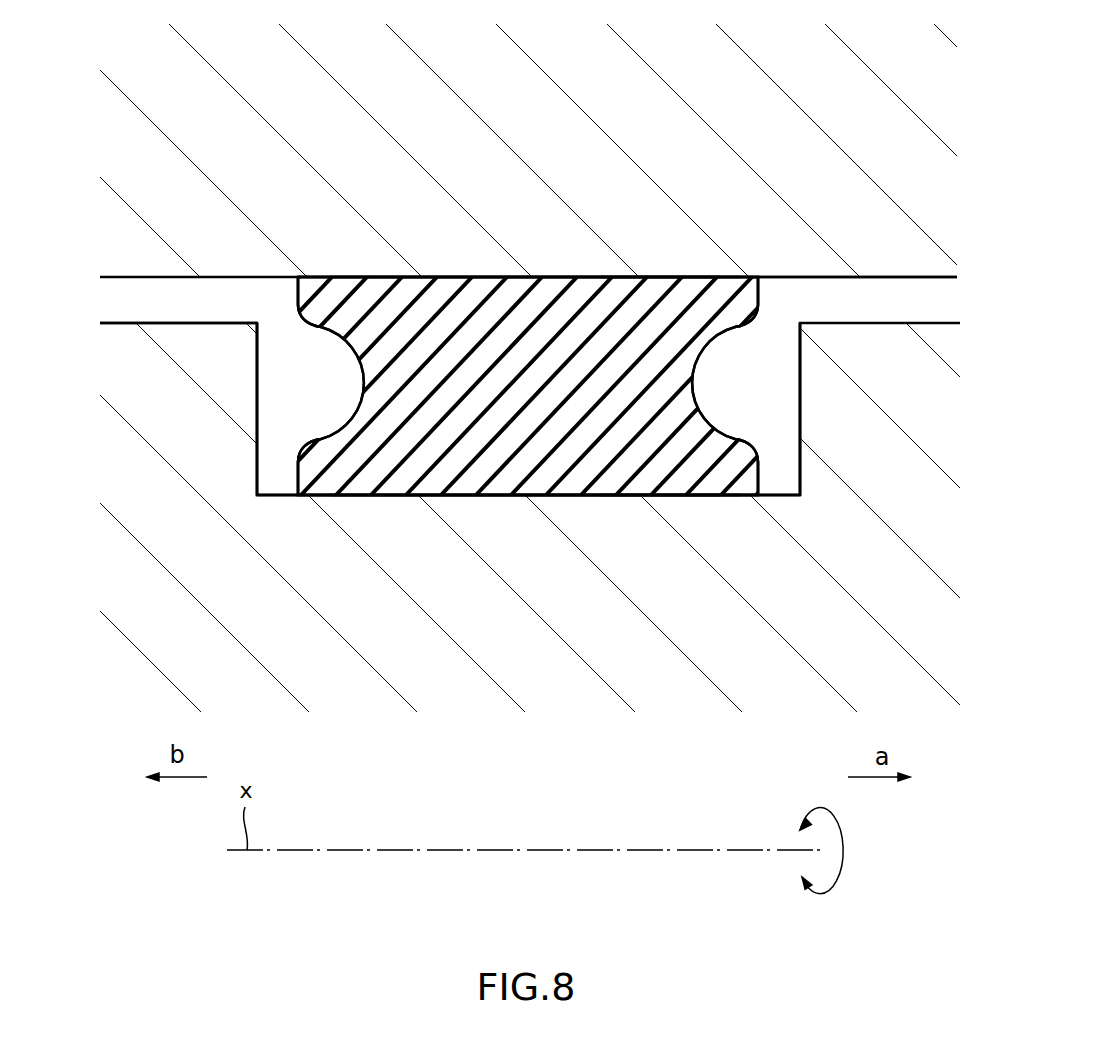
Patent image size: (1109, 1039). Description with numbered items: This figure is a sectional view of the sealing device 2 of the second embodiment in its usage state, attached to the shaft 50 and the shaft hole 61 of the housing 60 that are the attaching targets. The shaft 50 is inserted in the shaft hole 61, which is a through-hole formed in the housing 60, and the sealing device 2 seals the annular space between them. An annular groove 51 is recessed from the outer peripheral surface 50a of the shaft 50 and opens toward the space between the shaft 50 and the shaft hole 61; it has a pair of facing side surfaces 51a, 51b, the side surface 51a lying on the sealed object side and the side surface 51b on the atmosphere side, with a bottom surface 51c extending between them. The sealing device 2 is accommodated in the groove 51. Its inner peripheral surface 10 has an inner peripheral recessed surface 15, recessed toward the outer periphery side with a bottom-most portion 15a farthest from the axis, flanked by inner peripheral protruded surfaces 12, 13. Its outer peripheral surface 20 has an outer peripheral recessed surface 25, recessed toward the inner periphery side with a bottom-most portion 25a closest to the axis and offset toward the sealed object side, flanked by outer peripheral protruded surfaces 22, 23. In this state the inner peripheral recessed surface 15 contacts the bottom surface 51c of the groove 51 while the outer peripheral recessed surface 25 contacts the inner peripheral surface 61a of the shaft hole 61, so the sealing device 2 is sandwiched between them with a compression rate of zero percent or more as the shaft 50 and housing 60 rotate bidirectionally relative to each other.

The sealing device 2 is at (288, 298).
The inner peripheral surface 10 is at (487, 500).
The inner peripheral protruded surface 12 is at (743, 497).
The inner peripheral protruded surface 13 is at (317, 497).
The inner peripheral recessed surface 15 is at (605, 500).
The bottom-most portion 15a is at (657, 497).
The outer peripheral surface 20 is at (487, 264).
The outer peripheral protruded surface 22 is at (742, 277).
The outer peripheral protruded surface 23 is at (313, 277).
The outer peripheral recessed surface 25 is at (603, 272).
The bottom-most portion 25a is at (637, 277).
The shaft 50 is at (285, 643).
The outer peripheral surface 50a is at (180, 323).
The groove 51 is at (781, 420).
The side surface 51a is at (801, 396).
The side surface 51b is at (257, 433).
The bottom surface 51c is at (786, 495).
The housing 60 is at (617, 82).
The shaft hole 61 is at (886, 293).
The inner peripheral surface 61a is at (794, 278).